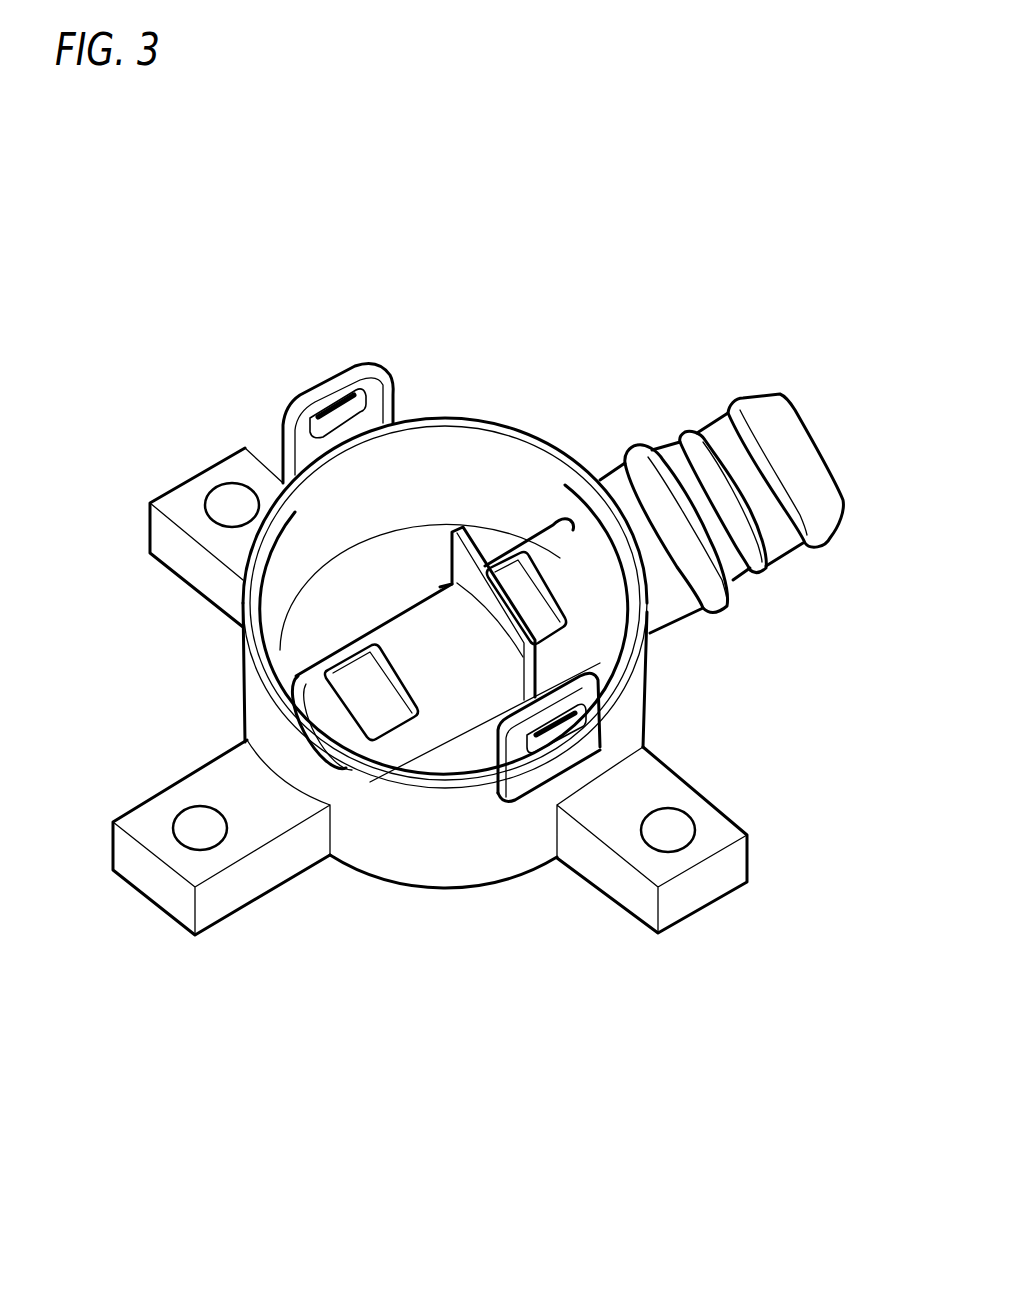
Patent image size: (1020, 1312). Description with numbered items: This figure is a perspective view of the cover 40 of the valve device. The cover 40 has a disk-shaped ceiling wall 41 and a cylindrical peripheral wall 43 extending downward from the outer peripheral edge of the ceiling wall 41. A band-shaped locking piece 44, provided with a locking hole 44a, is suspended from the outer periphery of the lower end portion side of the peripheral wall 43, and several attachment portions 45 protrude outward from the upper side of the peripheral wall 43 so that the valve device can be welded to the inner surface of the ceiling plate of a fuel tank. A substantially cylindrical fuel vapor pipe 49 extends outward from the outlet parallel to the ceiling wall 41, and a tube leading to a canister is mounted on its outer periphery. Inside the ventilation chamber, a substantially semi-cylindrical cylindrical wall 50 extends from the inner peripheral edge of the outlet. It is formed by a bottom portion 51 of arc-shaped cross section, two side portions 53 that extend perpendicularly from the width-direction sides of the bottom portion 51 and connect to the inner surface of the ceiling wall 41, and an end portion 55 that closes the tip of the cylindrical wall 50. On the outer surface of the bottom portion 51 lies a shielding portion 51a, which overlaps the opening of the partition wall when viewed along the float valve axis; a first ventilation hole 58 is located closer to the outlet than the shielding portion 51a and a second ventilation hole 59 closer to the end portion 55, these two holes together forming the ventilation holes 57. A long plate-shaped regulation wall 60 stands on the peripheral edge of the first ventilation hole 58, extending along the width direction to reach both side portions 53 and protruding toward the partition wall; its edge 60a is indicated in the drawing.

The cover 40 is at (510, 400).
The ceiling wall 41 is at (303, 635).
The peripheral wall 43 is at (262, 727).
The locking piece 44 is at (350, 363).
The locking hole 44a is at (340, 398).
The attachment portions 45 is at (188, 495).
The fuel vapor pipe 49 is at (802, 440).
The cylindrical wall 50 is at (397, 588).
The bottom portion 51 is at (573, 540).
The shielding portion 51a is at (467, 648).
The side portions 53 is at (305, 680).
The end portion 55 is at (307, 703).
The ventilation holes 57 is at (345, 1023).
The first ventilation hole 58 is at (548, 617).
The second ventilation hole 59 is at (384, 708).
The regulation wall 60 is at (461, 508).
The rib edge 60a is at (475, 538).